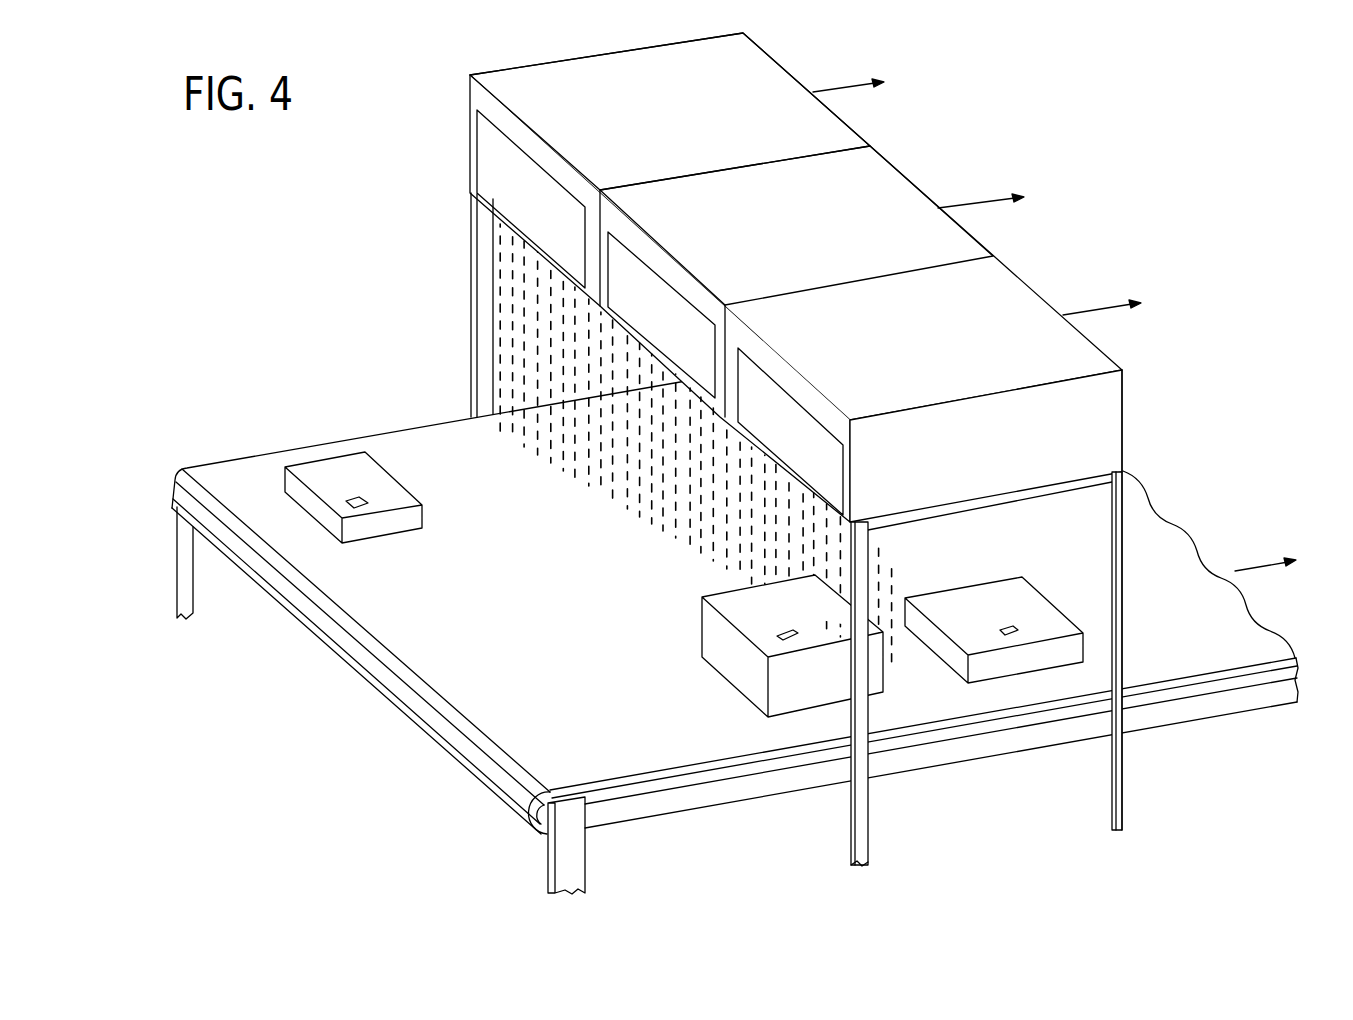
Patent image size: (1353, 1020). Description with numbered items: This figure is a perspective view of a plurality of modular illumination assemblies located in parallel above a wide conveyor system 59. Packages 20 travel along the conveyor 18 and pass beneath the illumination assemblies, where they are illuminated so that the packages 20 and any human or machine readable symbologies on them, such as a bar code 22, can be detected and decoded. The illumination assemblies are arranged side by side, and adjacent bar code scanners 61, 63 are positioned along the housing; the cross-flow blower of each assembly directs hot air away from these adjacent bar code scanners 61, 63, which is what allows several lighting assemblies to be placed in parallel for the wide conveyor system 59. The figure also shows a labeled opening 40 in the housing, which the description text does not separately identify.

The conveyor 18 is at (230, 462).
The packages 20 is at (688, 553).
The bar code 22 is at (360, 506).
The air outlet opening 40 is at (758, 405).
The wide conveyor system 59 is at (835, 350).
The bar code scanner 61 is at (783, 203).
The bar code scanner 63 is at (708, 82).